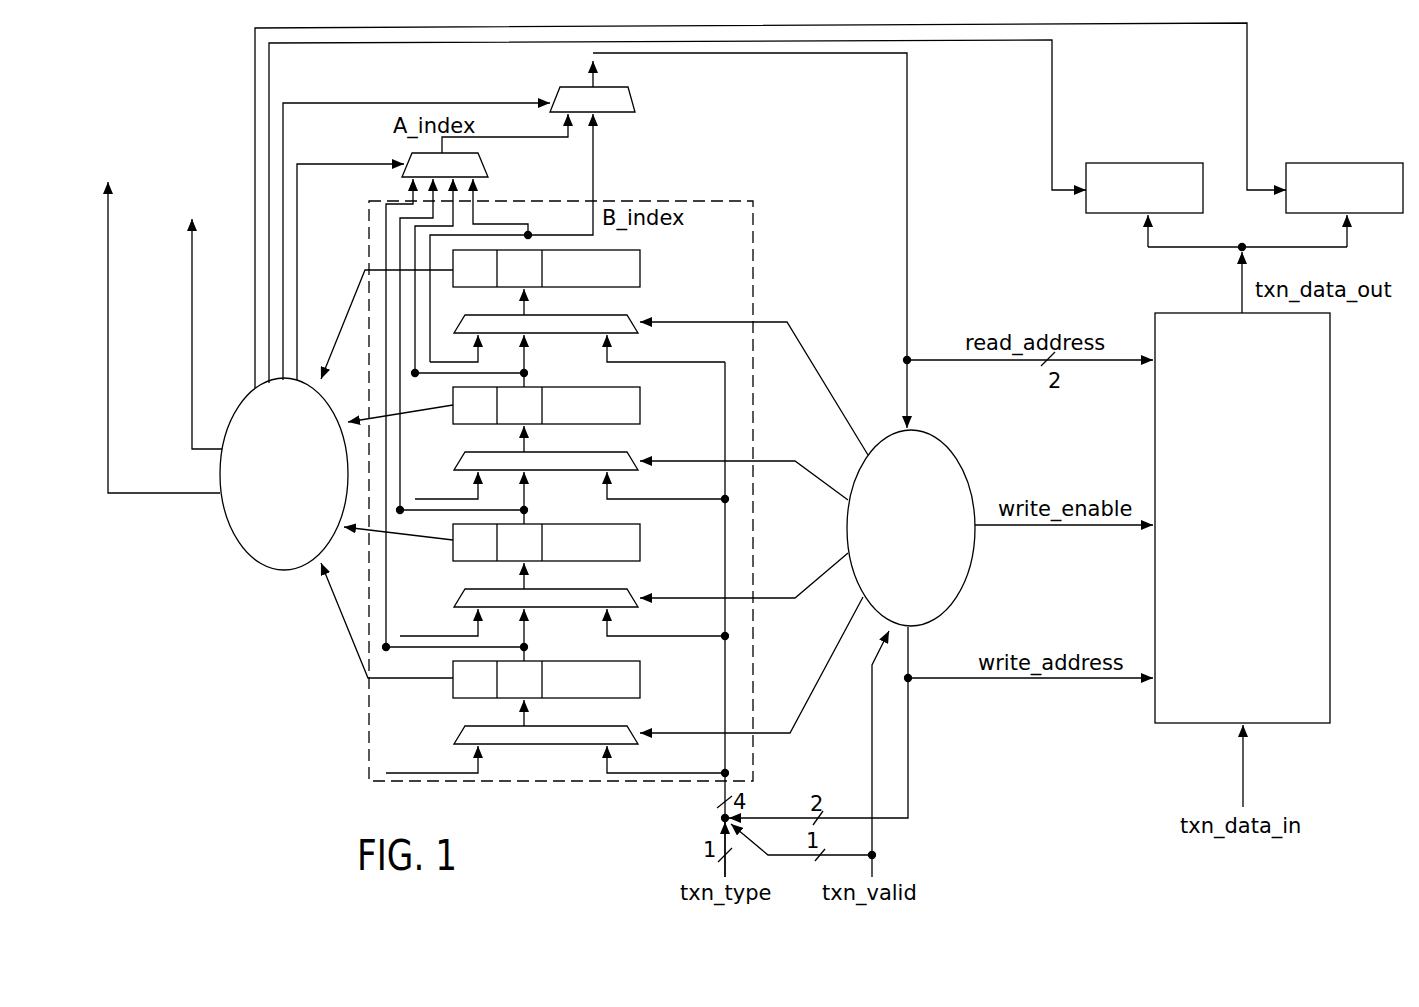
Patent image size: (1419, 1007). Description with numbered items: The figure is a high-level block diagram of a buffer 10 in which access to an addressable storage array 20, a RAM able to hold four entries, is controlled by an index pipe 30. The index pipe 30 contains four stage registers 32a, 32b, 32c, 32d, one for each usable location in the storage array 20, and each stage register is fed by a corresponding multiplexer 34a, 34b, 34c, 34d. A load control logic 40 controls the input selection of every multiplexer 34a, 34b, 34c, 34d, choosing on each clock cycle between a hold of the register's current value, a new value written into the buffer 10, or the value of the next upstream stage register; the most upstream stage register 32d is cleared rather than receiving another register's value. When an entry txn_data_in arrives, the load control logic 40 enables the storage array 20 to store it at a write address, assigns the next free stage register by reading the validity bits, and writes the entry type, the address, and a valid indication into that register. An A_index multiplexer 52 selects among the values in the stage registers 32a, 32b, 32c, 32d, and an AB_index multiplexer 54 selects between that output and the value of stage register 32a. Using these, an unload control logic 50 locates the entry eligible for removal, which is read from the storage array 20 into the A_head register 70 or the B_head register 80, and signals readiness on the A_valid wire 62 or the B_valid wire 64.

The buffer 10 is at (203, 824).
The addressable storage array 20 is at (1231, 579).
The index pipe 30 is at (737, 198).
The stage register 32a is at (640, 268).
The stage register 32b is at (641, 405).
The stage register 32c is at (640, 542).
The stage register 32d is at (641, 682).
The multiplexer 34a is at (617, 326).
The multiplexer 34b is at (617, 463).
The multiplexer 34c is at (617, 600).
The multiplexer 34d is at (617, 737).
The load control logic 40 is at (899, 592).
The unload control logic 50 is at (276, 537).
The A_index multiplexer 52 is at (478, 172).
The AB_index multiplexer 54 is at (622, 102).
The A_valid wire 62 is at (108, 207).
The B_valid wire 64 is at (190, 240).
The A_head register 70 is at (1180, 167).
The B_head register 80 is at (1378, 167).